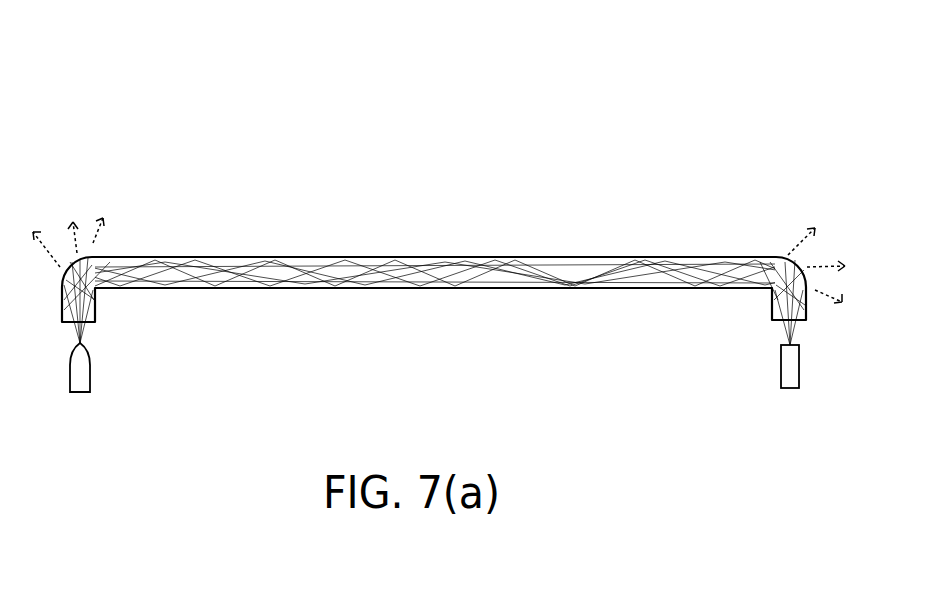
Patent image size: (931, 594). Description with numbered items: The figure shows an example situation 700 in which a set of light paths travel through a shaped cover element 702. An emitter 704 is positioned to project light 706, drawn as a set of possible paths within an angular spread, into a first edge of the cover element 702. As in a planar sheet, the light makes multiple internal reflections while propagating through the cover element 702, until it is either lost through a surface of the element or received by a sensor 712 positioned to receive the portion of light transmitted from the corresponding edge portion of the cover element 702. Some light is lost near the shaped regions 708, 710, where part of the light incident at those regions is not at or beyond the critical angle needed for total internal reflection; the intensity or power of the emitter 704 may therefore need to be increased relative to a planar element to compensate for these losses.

The example situation 700 is at (778, 112).
The shaped cover element 702 is at (410, 258).
The emitter 704 is at (92, 372).
The light 706 is at (103, 340).
The shaped region 708 is at (130, 240).
The shaped region 710 is at (765, 245).
The sensor 712 is at (781, 360).